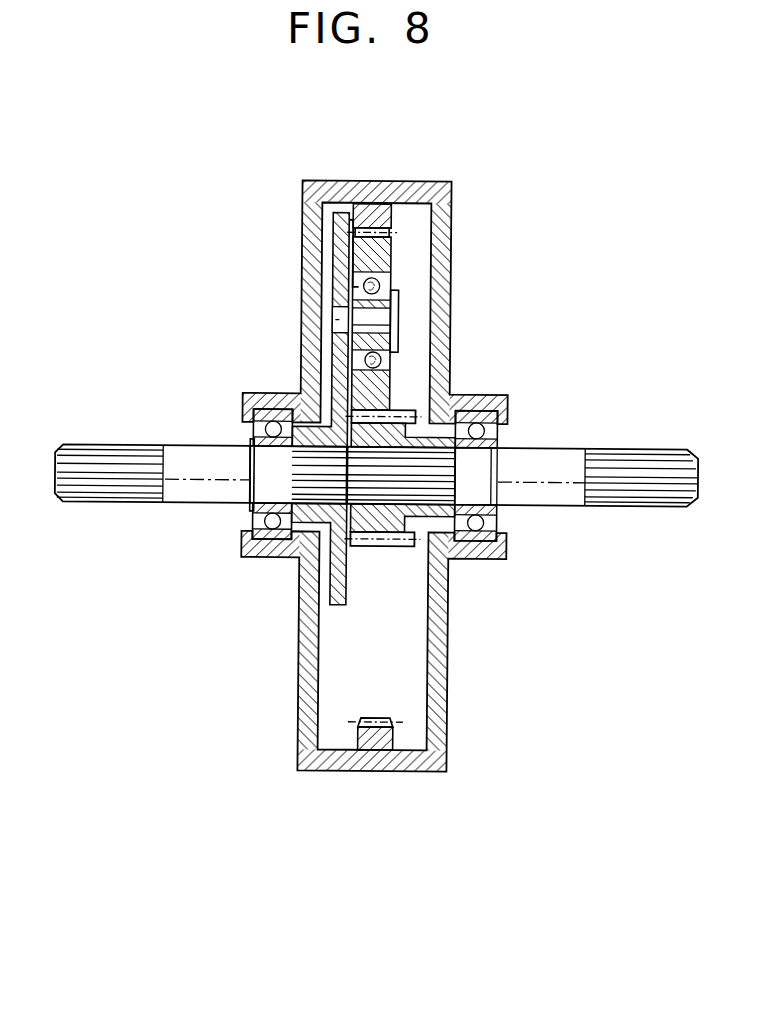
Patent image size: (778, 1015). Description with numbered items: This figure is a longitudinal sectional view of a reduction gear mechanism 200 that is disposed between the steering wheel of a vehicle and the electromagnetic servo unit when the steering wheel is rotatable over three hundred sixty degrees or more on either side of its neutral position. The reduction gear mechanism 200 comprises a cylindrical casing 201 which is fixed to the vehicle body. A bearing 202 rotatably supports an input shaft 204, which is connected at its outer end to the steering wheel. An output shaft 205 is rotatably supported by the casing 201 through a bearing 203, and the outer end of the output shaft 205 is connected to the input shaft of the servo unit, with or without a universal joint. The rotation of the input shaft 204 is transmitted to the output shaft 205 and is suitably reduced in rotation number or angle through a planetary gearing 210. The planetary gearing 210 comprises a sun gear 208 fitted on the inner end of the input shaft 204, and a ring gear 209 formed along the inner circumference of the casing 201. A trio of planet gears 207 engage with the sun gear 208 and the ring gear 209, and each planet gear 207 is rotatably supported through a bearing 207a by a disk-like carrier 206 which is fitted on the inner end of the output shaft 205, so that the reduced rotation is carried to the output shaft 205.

The reduction gear mechanism 200 is at (503, 314).
The cylindrical casing 201 is at (444, 190).
The bearing 202 is at (500, 524).
The bearing 203 is at (248, 524).
The input shaft 204 is at (558, 468).
The output shaft 205 is at (178, 455).
The disk-like carrier 206 is at (338, 268).
The planet gear 207 is at (384, 246).
The bearing 207a is at (382, 282).
The sun gear 208 is at (372, 545).
The ring gear 209 is at (370, 207).
The planetary gearing 210 is at (415, 373).